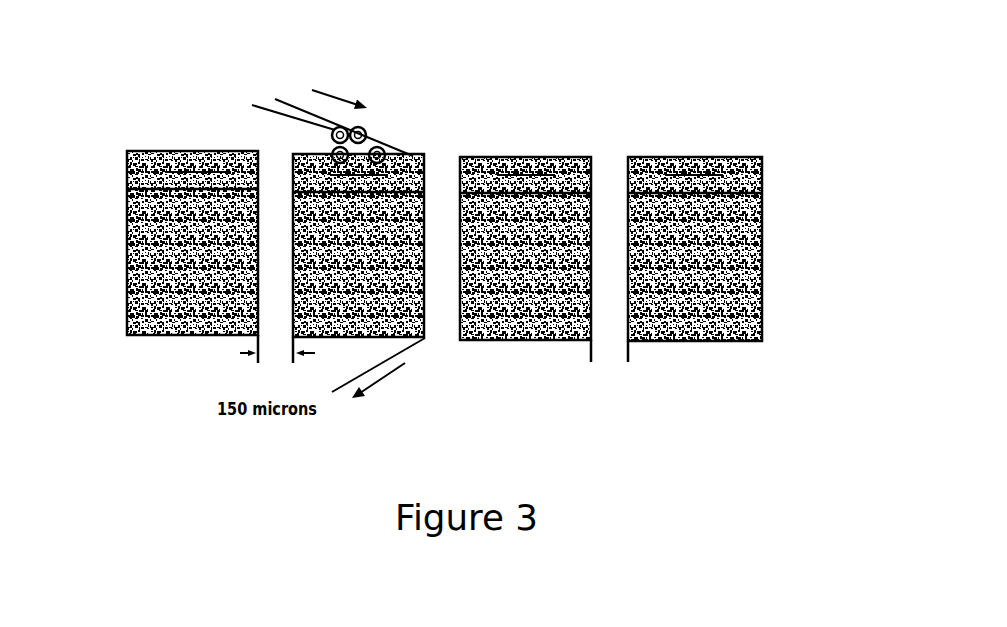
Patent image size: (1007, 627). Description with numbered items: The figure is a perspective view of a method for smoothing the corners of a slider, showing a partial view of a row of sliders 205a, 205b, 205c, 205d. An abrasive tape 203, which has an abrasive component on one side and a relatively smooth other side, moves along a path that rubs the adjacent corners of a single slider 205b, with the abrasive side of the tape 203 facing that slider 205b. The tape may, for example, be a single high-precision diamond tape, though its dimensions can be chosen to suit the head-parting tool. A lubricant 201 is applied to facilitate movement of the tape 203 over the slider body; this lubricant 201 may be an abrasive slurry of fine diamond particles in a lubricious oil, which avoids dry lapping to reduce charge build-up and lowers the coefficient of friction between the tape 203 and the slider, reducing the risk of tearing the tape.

The lubricant 201 is at (449, 247).
The abrasive tape 203 is at (388, 137).
The slider 205a is at (127, 258).
The slider 205b is at (400, 318).
The slider 205c is at (528, 320).
The slider 205d is at (727, 322).